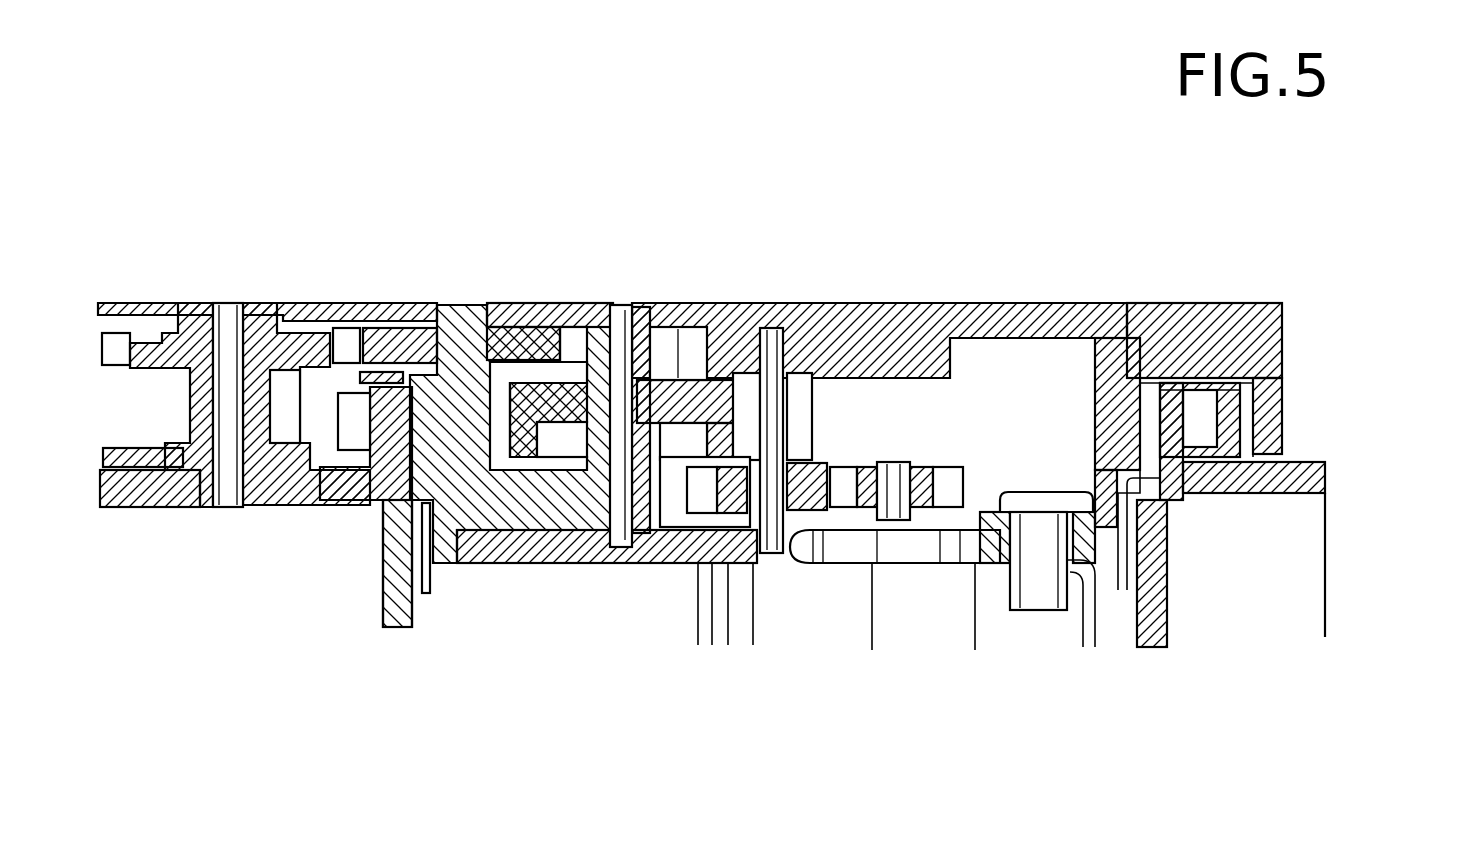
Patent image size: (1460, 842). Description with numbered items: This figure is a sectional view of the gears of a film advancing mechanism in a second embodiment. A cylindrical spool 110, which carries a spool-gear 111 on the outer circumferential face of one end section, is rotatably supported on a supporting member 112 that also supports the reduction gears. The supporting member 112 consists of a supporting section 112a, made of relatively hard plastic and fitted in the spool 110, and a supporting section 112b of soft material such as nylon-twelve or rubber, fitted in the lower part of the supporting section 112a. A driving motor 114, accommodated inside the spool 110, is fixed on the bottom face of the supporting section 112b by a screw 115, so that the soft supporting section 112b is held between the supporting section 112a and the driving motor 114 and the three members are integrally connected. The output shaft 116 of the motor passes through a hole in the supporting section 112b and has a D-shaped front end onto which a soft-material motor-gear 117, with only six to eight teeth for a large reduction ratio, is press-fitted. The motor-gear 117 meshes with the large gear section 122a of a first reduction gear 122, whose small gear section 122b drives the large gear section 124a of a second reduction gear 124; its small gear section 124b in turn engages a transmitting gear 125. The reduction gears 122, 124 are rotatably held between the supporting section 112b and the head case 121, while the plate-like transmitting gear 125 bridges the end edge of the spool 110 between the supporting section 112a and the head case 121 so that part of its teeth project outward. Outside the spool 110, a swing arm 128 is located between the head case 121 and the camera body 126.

The spool 110 is at (380, 568).
The spool-gear 111 is at (347, 423).
The supporting member 112 is at (298, 628).
The supporting section 112a is at (383, 623).
The supporting section 112b is at (527, 552).
The driving motor 114 is at (1085, 627).
The screw 115 is at (1043, 537).
The output shaft 116 is at (893, 510).
The motor-gear 117 is at (913, 510).
The head case 121 is at (1048, 318).
The first reduction gear 122 is at (796, 178).
The large gear section 122a is at (837, 457).
The small gear section 122b is at (815, 470).
The second reduction gear 124 is at (628, 178).
The large gear section 124a is at (720, 365).
The small gear section 124b is at (662, 333).
The transmitting gear 125 is at (507, 330).
The camera body 126 is at (147, 505).
The swing arm 128 is at (118, 447).